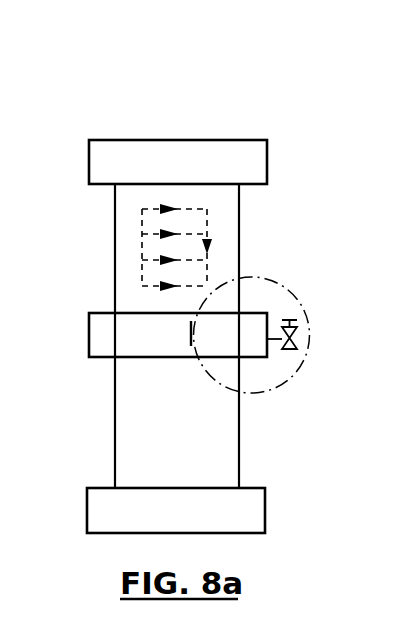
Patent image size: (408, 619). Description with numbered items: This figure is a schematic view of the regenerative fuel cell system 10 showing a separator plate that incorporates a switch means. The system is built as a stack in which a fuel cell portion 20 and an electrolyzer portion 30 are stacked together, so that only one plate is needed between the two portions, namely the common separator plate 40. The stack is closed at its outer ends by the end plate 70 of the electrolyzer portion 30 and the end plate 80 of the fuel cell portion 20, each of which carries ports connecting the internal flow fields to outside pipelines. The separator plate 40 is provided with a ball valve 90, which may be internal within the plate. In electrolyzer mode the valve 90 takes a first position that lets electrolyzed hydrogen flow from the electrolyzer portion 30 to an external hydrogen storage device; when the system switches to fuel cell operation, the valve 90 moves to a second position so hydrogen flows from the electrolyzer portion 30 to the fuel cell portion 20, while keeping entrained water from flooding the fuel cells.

The regenerative fuel cell system 10 is at (233, 83).
The fuel cell portion 20 is at (115, 423).
The electrolyzer portion 30 is at (115, 240).
The separator plate 40 is at (92, 332).
The end plate of the electrolyzer portion 70 is at (92, 161).
The end plate of the fuel cell portion 80 is at (88, 504).
The ball valve 90 is at (311, 317).